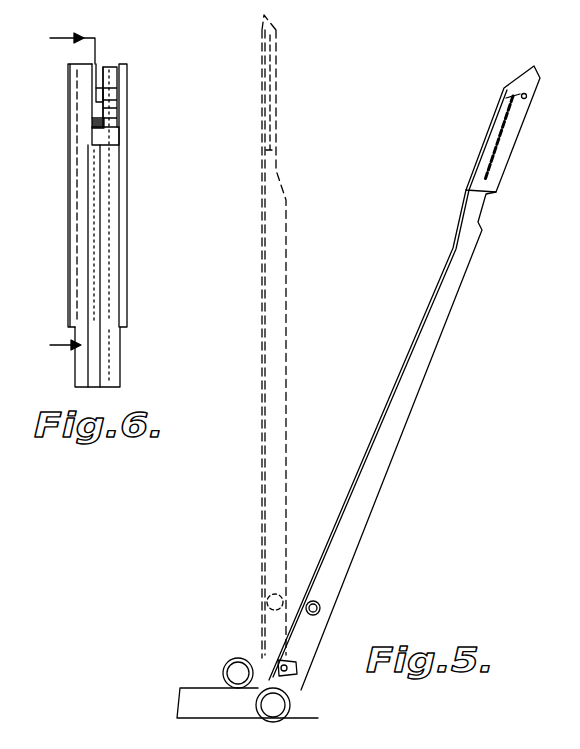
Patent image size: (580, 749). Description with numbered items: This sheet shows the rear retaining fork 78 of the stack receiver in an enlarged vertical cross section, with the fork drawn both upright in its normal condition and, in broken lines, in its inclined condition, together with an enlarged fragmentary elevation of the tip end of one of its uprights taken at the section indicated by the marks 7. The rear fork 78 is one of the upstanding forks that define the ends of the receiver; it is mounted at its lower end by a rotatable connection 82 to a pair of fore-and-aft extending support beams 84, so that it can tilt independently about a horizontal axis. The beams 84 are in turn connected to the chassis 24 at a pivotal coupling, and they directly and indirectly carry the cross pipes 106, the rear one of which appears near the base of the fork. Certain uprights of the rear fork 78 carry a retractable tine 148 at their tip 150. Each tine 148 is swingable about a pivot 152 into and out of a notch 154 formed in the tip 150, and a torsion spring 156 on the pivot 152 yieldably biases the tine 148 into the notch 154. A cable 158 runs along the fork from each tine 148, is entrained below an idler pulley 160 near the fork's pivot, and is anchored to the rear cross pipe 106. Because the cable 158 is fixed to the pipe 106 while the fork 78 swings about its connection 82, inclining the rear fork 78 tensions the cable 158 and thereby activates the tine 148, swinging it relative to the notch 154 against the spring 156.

In FIG. 6, the section line 7- 7 is at (58, 193).
In FIG. 5, the chassis 24 is at (165, 0).
In FIG. 6, the rear retaining fork 78 is at (126, 345).
In FIG. 5, the rear retaining fork 78 is at (294, 300).
In FIG. 5, the rotatable connection 82 is at (292, 718).
In FIG. 5, the support beams 84 is at (182, 690).
In FIG. 5, the cross pipe 106 is at (224, 672).
In FIG. 6, the retractable tine 148 is at (112, 67).
In FIG. 5, the retractable tine 148 is at (508, 94).
In FIG. 6, the tip 150 is at (70, 217).
In FIG. 5, the tip 150 is at (279, 78).
In FIG. 6, the pivot 152 is at (117, 121).
In FIG. 6, the notch 154 is at (98, 68).
In FIG. 6, the torsion spring 156 is at (94, 120).
In FIG. 5, the cable 158 is at (447, 243).
In FIG. 5, the idler pulley 160 is at (277, 660).